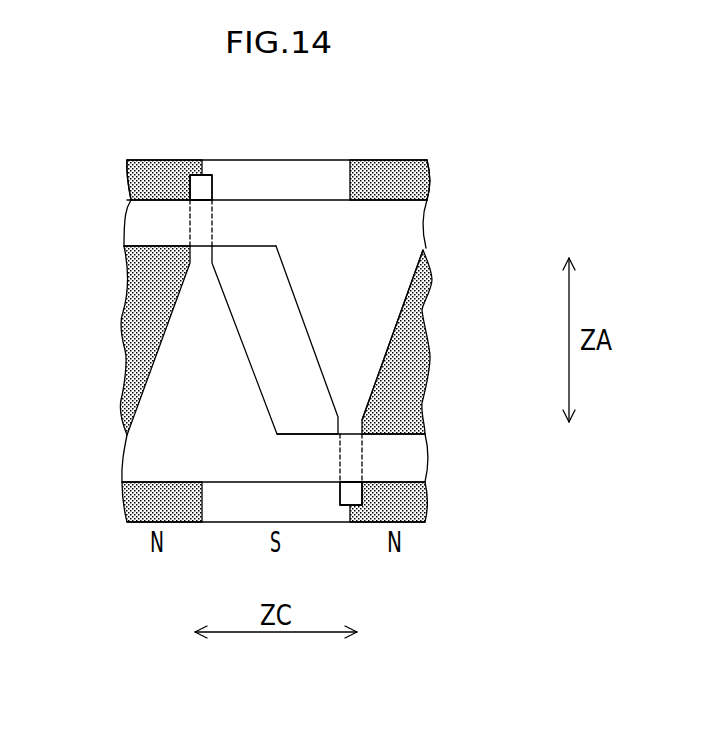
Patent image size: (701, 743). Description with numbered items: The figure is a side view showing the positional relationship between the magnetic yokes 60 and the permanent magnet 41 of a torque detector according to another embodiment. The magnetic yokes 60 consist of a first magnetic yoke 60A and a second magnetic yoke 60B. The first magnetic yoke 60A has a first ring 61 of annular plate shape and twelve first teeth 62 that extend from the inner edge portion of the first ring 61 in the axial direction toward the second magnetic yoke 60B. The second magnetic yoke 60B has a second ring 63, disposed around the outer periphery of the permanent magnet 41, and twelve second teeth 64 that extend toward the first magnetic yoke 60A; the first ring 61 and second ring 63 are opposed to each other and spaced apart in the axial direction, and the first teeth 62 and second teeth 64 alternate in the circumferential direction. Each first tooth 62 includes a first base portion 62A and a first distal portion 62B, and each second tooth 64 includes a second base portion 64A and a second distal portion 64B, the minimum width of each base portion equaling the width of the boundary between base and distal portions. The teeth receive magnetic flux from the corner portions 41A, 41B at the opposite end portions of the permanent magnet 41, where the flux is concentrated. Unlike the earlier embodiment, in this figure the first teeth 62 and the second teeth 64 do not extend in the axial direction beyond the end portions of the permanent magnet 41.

The permanent magnet 41 is at (147, 151).
The corner portion 41A is at (325, 160).
The corner portion 41B is at (223, 523).
The magnetic yokes 60 is at (78, 187).
The first magnetic yoke 60A is at (123, 220).
The second magnetic yoke 60B is at (130, 410).
The first ring 61 is at (237, 210).
The first teeth 62 is at (407, 307).
The first base portion 62A is at (385, 330).
The first distal portion 62B is at (345, 507).
The second ring 63 is at (315, 470).
The second teeth 64 is at (150, 352).
The second base portion 64A is at (232, 355).
The second distal portion 64B is at (195, 158).